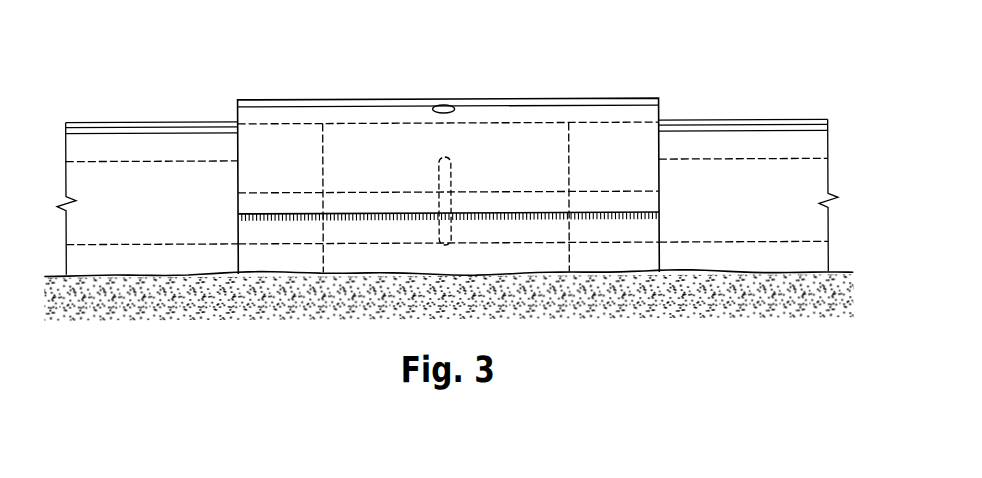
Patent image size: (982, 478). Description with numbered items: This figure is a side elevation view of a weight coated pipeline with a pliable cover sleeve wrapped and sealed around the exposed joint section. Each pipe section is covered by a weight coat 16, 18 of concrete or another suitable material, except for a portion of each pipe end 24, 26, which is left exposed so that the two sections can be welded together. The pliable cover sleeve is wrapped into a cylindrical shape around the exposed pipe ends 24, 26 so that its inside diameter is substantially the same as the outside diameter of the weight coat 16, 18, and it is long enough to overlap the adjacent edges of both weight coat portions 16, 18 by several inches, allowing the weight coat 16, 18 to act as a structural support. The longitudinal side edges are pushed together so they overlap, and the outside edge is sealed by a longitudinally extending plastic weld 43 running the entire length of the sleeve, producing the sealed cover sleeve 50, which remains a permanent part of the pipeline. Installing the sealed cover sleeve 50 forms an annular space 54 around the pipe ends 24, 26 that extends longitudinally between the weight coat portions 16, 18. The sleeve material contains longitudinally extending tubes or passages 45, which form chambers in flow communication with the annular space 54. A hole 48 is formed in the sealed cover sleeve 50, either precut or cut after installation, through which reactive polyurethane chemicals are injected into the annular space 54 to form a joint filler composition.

The weight coat 16 is at (178, 148).
The weight coat 18 is at (783, 145).
The sealed cover sleeve 50 is at (372, 73).
The hole 48 is at (444, 105).
The tubes or passages 45 is at (508, 143).
The plastic weld 43 is at (297, 222).
The pipe end 24 is at (382, 232).
The annular space 54 is at (498, 257).
The pipe end 26 is at (540, 228).